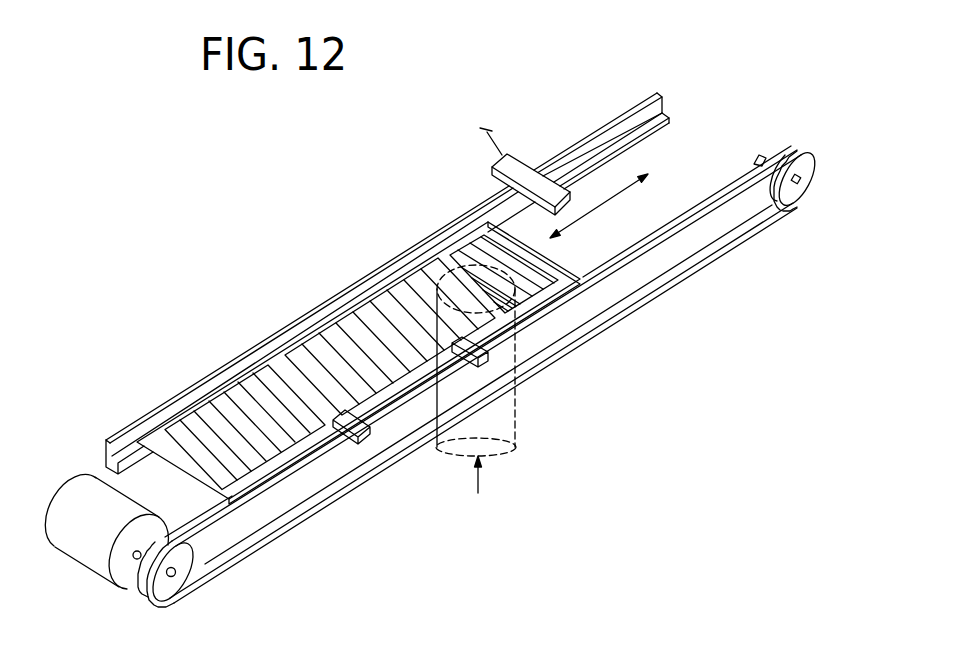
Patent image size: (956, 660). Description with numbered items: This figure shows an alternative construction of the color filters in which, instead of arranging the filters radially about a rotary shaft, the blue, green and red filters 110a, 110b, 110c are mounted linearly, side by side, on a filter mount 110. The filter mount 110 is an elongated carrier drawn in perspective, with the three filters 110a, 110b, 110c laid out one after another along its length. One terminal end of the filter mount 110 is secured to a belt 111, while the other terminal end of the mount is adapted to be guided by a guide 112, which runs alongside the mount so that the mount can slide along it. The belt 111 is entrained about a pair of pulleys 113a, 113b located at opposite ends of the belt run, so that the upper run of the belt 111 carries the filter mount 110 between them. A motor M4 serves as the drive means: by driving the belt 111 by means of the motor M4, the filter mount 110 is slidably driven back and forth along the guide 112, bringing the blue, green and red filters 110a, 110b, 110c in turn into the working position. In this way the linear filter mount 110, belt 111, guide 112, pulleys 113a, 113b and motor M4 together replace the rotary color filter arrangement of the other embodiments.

The filter mount 110 is at (263, 347).
The blue filter 110a is at (215, 413).
The green filter 110b is at (338, 333).
The red filter 110c is at (445, 262).
The belt 111 is at (348, 494).
The guide 112 is at (600, 127).
The pulley 113a is at (170, 590).
The pulley 113b is at (795, 200).
The motor M4 is at (85, 483).